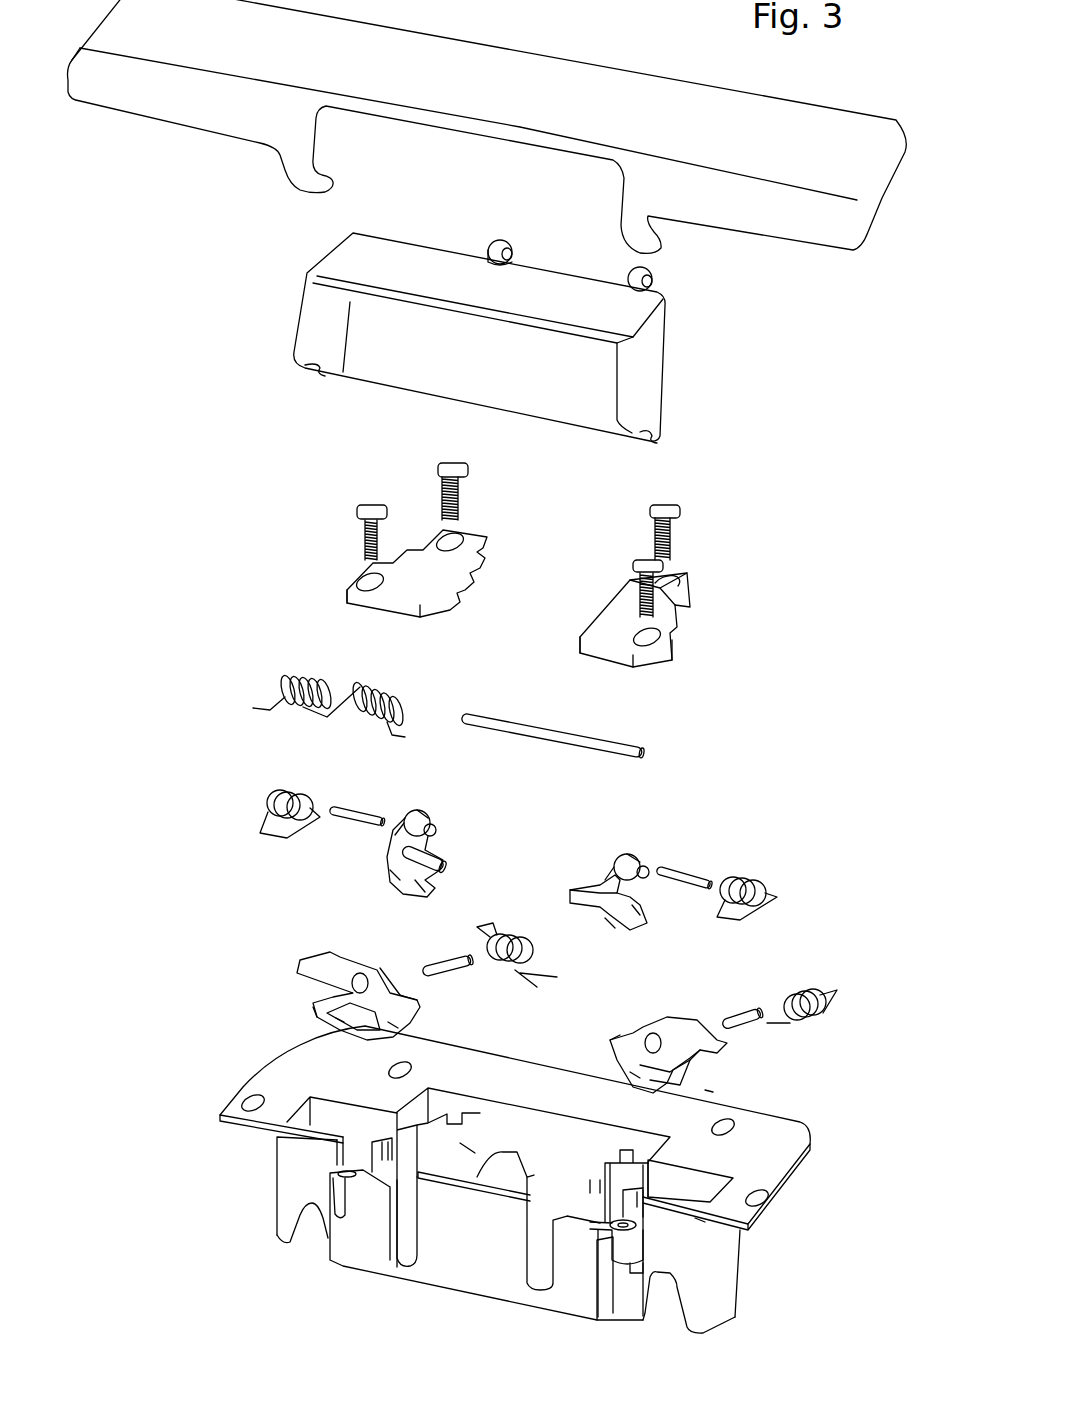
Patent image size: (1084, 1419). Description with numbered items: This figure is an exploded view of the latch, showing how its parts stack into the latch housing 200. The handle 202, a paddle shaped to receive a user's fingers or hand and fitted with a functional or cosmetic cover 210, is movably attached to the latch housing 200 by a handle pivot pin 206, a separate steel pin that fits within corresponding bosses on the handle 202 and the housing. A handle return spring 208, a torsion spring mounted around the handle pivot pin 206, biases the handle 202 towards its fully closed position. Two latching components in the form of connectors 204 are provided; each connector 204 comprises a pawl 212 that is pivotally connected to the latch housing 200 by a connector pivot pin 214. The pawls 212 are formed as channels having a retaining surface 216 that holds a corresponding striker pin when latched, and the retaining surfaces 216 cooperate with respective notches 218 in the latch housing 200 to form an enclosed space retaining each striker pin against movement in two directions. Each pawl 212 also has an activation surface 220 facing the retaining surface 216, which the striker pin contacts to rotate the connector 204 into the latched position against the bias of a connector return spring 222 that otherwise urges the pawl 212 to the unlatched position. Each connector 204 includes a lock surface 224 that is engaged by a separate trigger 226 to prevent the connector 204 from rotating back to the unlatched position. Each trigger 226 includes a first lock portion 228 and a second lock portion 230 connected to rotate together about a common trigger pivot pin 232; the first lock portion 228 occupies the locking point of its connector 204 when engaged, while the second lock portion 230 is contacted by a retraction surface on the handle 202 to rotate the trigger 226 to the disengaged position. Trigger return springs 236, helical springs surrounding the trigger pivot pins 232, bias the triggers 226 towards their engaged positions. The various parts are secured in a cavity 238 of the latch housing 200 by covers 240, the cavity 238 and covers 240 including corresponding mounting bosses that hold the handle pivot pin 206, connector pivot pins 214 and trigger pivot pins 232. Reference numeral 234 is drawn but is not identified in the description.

The latch housing 200 is at (285, 1152).
The handle 202 is at (700, 318).
The connector 204 is at (393, 1027).
The handle pivot pin 206 is at (640, 743).
The handle return spring 208 is at (283, 690).
The cover 210 is at (879, 210).
The pawl 212 is at (340, 1020).
The connector pivot pin 214 is at (418, 970).
The retaining surface 216 is at (313, 1007).
The notch 218 is at (280, 1250).
The activation surface 220 is at (310, 977).
The connector return spring 222 is at (497, 923).
The lock surface 224 is at (420, 1002).
The trigger 226 is at (423, 810).
The first lock portion 228 is at (427, 887).
The second lock portion 230 is at (433, 852).
The trigger pivot pin 232 is at (360, 807).
The lever body 234 is at (397, 872).
The trigger return spring 236 is at (267, 812).
The cavity 238 is at (467, 1147).
The cover 240 is at (367, 583).